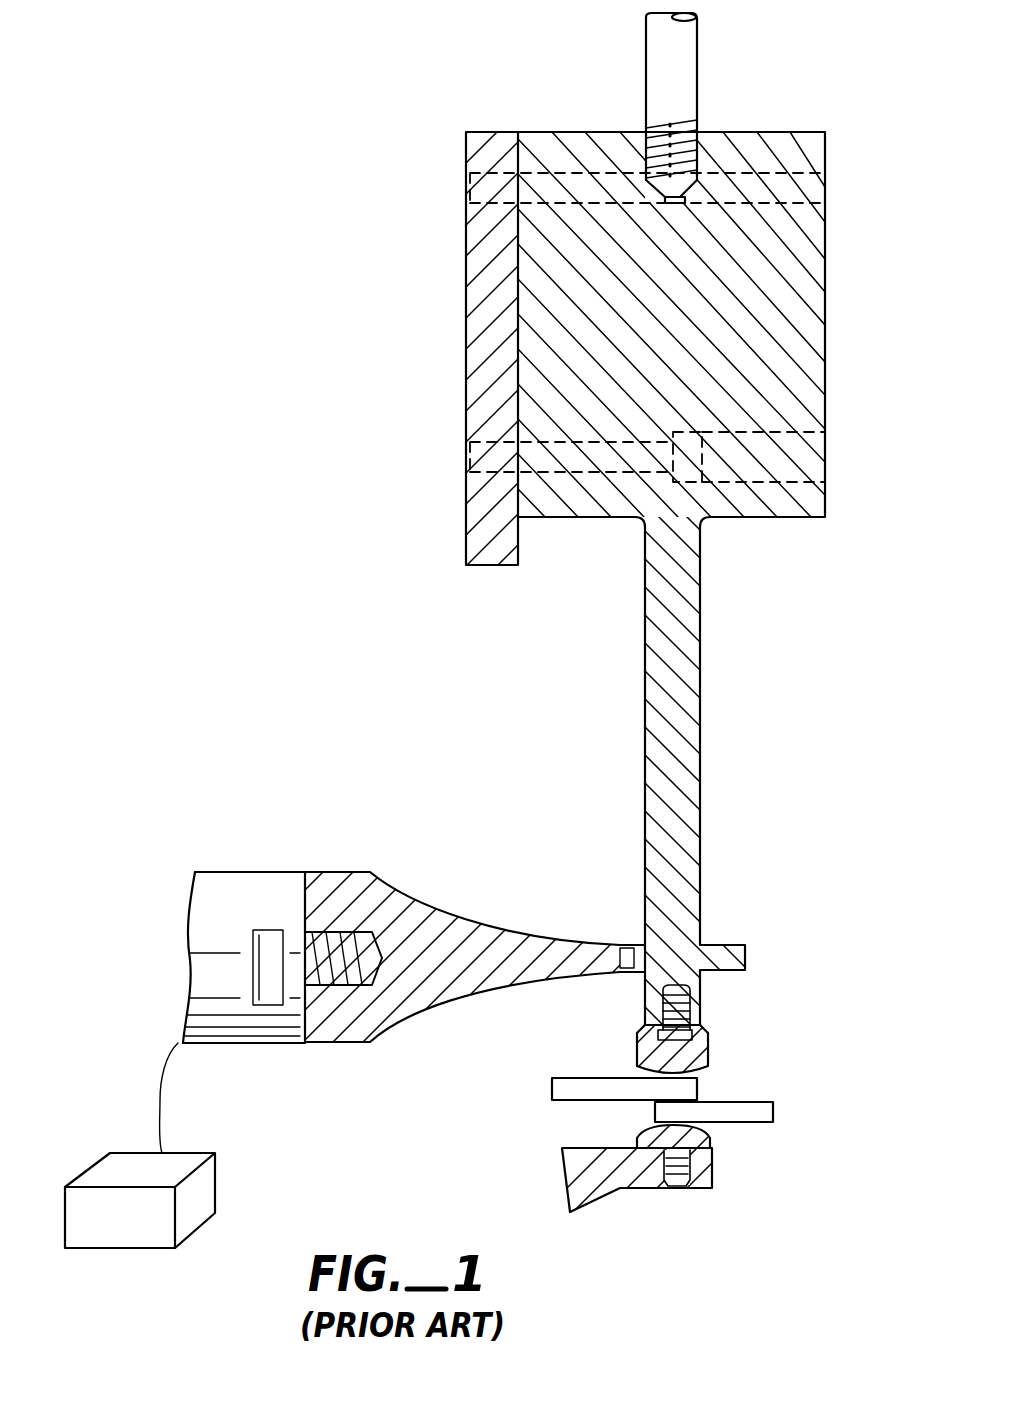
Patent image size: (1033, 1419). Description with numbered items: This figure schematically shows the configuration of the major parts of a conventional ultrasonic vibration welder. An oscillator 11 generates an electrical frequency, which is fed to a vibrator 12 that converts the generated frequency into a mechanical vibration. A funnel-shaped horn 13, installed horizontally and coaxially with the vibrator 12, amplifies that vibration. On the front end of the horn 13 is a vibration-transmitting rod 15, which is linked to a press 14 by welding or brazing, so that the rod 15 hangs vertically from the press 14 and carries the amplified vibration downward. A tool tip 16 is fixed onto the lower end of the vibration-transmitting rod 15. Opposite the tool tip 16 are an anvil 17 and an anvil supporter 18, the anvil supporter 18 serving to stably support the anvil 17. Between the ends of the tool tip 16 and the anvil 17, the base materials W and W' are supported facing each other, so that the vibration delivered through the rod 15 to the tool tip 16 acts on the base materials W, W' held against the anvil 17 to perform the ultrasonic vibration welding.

The oscillator 11 is at (210, 1197).
The vibrator 12 is at (246, 880).
The funnel-shaped horn 13 is at (425, 908).
The press 14 is at (698, 28).
The vibration-transmitting rod 15 is at (700, 725).
The tool tip 16 is at (710, 1052).
The anvil 17 is at (712, 1138).
The anvil supporter 18 is at (712, 1178).
The base material W is at (592, 1075).
The base material W' is at (759, 1115).